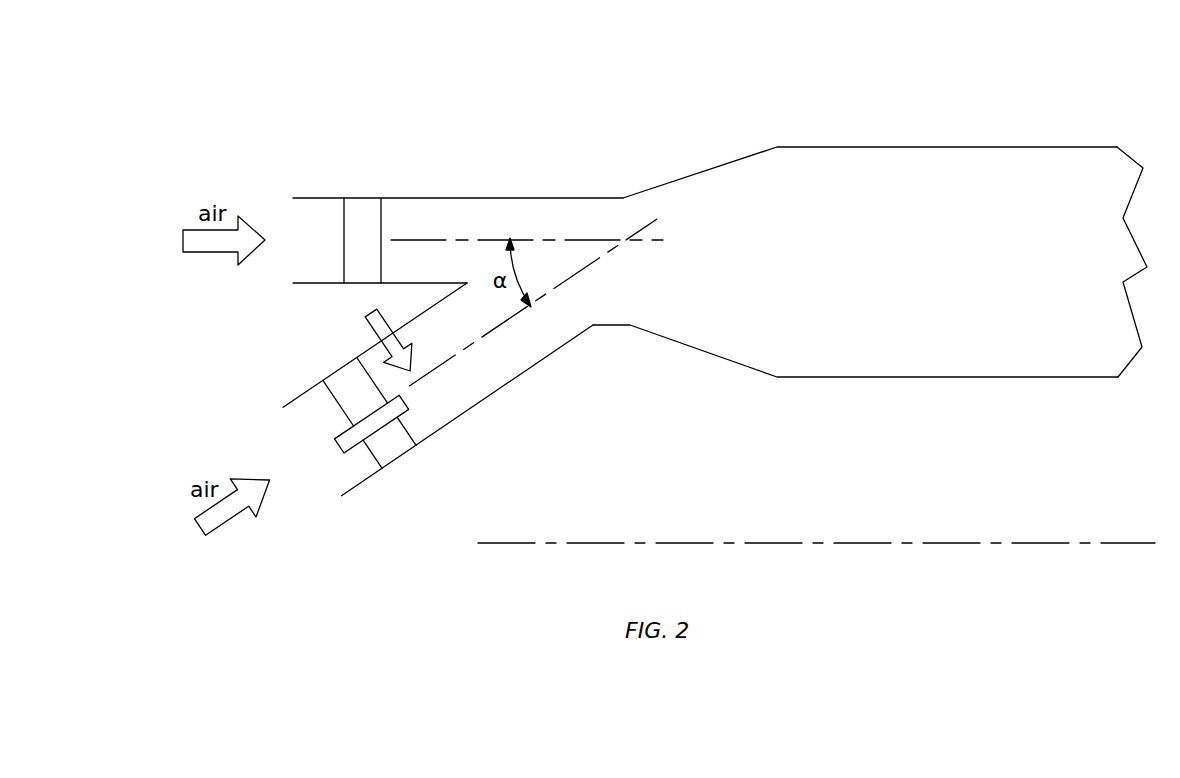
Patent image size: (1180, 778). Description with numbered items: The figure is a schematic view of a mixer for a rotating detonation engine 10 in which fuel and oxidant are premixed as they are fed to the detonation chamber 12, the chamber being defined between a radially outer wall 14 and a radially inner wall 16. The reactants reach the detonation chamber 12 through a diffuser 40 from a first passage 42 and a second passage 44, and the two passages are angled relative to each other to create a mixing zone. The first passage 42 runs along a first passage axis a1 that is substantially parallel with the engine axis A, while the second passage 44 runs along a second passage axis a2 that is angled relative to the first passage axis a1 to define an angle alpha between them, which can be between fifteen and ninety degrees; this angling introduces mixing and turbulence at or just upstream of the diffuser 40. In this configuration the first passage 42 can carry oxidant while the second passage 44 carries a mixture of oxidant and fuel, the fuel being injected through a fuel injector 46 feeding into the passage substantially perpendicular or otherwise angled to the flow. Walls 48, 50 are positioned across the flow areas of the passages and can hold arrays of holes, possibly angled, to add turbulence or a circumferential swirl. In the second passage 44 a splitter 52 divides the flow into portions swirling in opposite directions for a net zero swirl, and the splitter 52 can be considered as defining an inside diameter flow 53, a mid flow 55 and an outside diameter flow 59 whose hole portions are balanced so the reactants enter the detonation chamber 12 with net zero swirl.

The rotating detonation engine 10 is at (1040, 92).
The detonation chamber 12 is at (1048, 268).
The radially outer wall 14 is at (953, 147).
The radially inner wall 16 is at (997, 378).
The diffuser 40 is at (622, 220).
The first passage 42 is at (372, 180).
The second passage 44 is at (408, 474).
The fuel injector 46 is at (377, 342).
The wall 48 is at (344, 222).
The wall 50 is at (342, 413).
The splitter 52 is at (340, 440).
The inside diameter flow 53 is at (417, 432).
The mid flow 55 is at (377, 373).
The outside diameter flow 59 is at (392, 237).
The first passage axis a1 is at (556, 238).
The second passage axis a2 is at (597, 283).
The axis A is at (1137, 540).